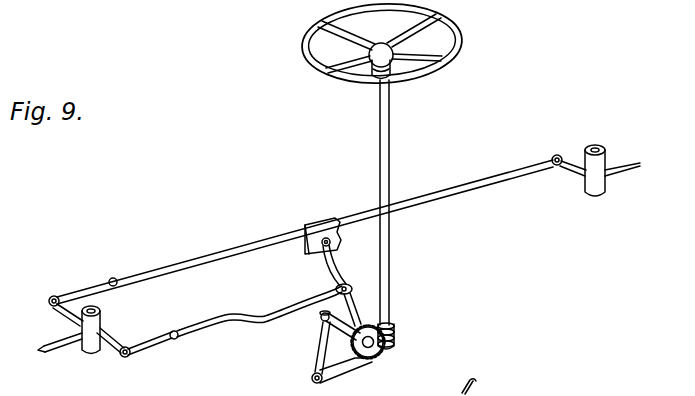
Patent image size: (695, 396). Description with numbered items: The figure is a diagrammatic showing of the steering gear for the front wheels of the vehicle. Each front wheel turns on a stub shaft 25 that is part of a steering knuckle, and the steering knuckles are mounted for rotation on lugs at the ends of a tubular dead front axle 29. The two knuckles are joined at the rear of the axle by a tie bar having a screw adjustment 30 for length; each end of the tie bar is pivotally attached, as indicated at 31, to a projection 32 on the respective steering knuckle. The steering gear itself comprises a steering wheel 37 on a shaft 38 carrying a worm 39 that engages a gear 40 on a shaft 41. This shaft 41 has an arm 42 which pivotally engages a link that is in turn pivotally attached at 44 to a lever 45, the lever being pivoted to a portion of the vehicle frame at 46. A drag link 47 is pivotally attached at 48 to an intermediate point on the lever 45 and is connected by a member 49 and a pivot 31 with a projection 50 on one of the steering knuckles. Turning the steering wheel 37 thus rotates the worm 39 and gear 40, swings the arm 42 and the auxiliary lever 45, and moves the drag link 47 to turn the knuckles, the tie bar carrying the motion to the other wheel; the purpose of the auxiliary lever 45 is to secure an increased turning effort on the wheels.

The stub shaft 25 is at (72, 342).
The dead front axle 29 is at (181, 263).
The screw adjustment 30 is at (116, 280).
The pivot 31 is at (560, 154).
The projection 32 is at (578, 180).
The steering wheel 37 is at (405, 79).
The shaft 38 is at (390, 159).
The worm 39 is at (396, 336).
The gear 40 is at (375, 355).
The shaft 41 is at (320, 323).
The arm 42 is at (319, 346).
The pivot 44 is at (355, 360).
The lever 45 is at (332, 268).
The pivot to frame 46 is at (303, 250).
The drag link 47 is at (240, 325).
The pivot 48 is at (353, 290).
The member 49 is at (138, 348).
The projection 50 is at (103, 332).